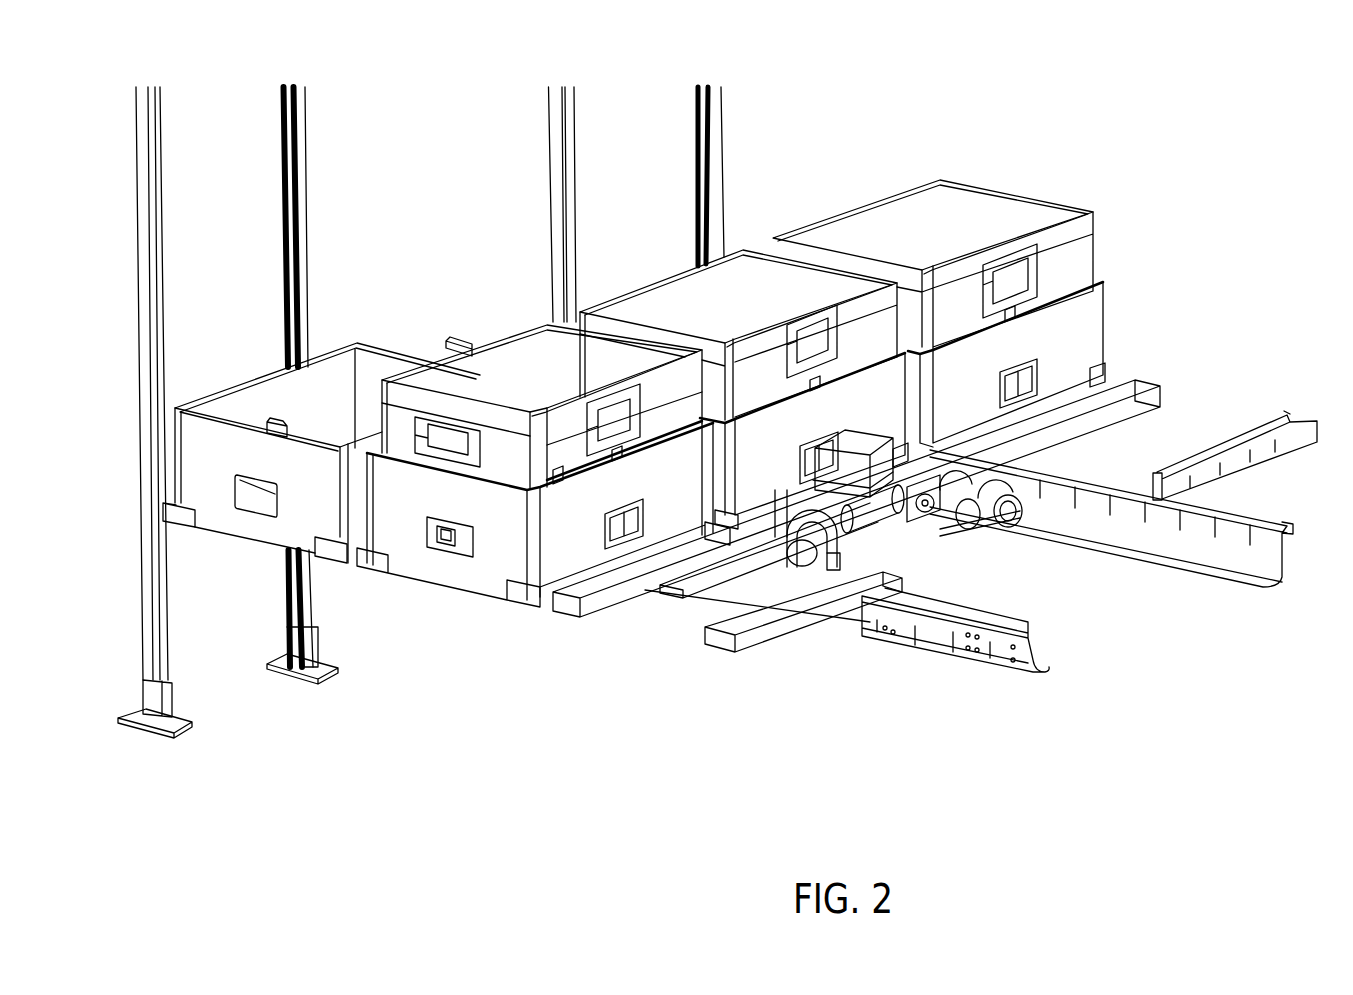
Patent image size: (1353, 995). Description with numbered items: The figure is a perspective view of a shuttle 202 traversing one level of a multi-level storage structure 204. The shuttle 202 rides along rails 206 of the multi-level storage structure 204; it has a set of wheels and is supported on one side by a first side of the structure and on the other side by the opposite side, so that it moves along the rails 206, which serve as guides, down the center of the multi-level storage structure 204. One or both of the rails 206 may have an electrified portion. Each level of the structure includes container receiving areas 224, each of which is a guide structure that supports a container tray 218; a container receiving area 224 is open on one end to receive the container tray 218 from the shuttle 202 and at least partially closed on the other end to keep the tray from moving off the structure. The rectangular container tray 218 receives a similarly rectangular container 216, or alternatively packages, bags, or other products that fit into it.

The shuttle 202 is at (993, 532).
The multi-level storage structure 204 is at (907, 709).
The rails 206 is at (1225, 597).
The container 216 is at (958, 182).
The container tray 218 is at (490, 595).
The container receiving area 224 is at (714, 647).